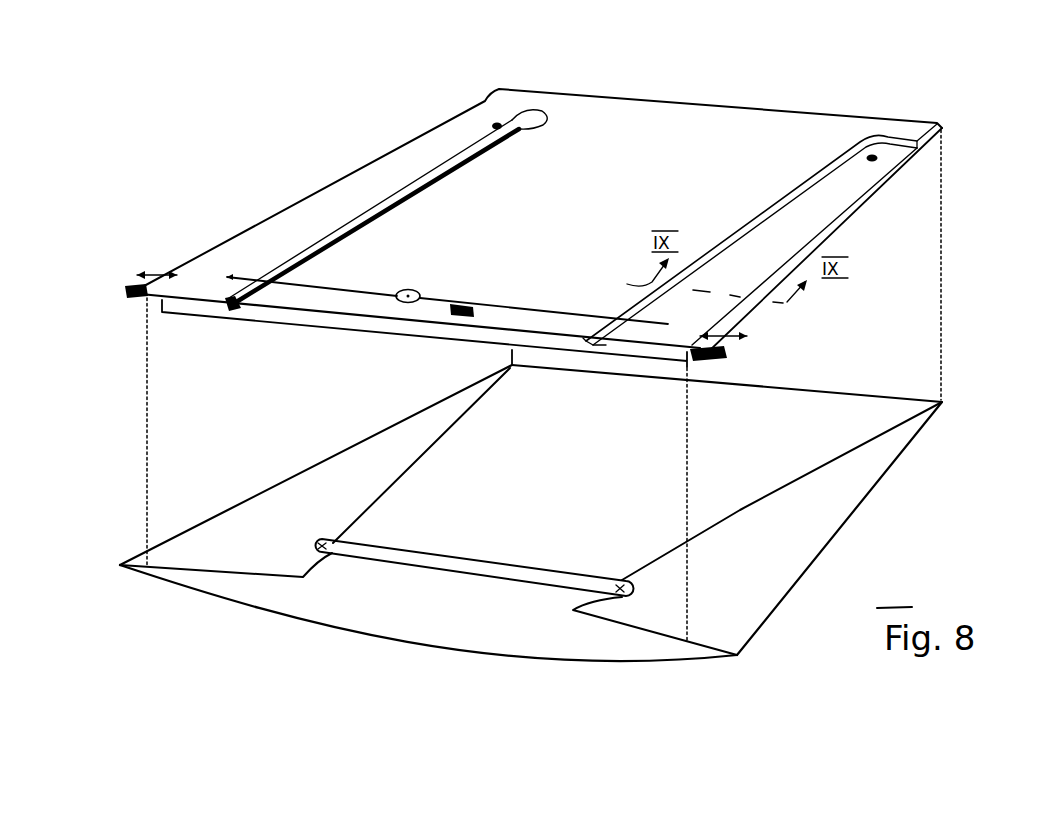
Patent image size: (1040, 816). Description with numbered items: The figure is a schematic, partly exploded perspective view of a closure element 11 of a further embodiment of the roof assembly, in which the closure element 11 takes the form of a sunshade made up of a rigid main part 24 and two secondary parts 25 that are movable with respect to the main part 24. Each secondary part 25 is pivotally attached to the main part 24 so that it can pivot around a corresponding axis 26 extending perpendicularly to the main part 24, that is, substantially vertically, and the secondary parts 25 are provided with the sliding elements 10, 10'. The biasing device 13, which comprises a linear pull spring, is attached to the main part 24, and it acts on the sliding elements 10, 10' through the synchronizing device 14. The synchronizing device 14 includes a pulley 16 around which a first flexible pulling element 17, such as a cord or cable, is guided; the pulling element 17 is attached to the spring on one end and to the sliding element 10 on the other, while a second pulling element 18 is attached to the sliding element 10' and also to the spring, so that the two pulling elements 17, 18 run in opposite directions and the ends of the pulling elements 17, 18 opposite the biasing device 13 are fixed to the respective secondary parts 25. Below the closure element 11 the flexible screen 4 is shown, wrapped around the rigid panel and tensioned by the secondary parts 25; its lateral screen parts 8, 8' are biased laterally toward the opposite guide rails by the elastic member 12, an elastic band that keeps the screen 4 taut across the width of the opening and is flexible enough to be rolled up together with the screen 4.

The flexible screen 4 is at (362, 645).
The lateral screen part 8 is at (727, 510).
The lateral screen part 8' is at (299, 499).
The sliding element 10 is at (754, 350).
The sliding element 10' is at (121, 299).
The closure element 11 is at (235, 200).
The elastic member 12 is at (377, 550).
The biasing device 13 is at (460, 338).
The synchronizing device 14 is at (405, 330).
The pulley 16 is at (412, 289).
The first flexible pulling element 17 is at (543, 310).
The second pulling element 18 is at (329, 290).
The main part 24 is at (767, 123).
The secondary part 25 is at (338, 207).
The axis 26 is at (494, 122).